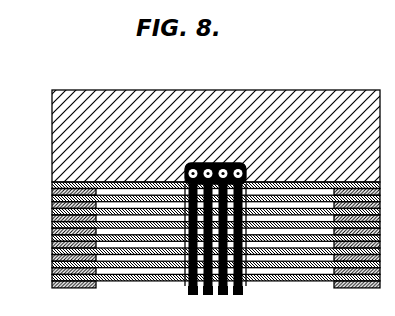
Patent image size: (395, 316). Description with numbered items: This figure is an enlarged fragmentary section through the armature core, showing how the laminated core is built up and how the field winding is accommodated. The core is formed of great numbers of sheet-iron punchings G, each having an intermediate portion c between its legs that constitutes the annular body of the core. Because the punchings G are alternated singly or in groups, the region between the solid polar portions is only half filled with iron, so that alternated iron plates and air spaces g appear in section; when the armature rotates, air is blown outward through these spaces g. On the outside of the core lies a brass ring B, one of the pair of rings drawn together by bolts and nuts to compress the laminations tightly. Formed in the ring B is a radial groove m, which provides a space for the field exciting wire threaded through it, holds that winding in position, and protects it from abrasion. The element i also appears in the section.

The brass ring B is at (300, 96).
The radial groove m is at (200, 155).
The intermediate portion of punching c is at (268, 261).
The air space g is at (136, 249).
The punching G is at (300, 273).
The bolts i is at (228, 286).